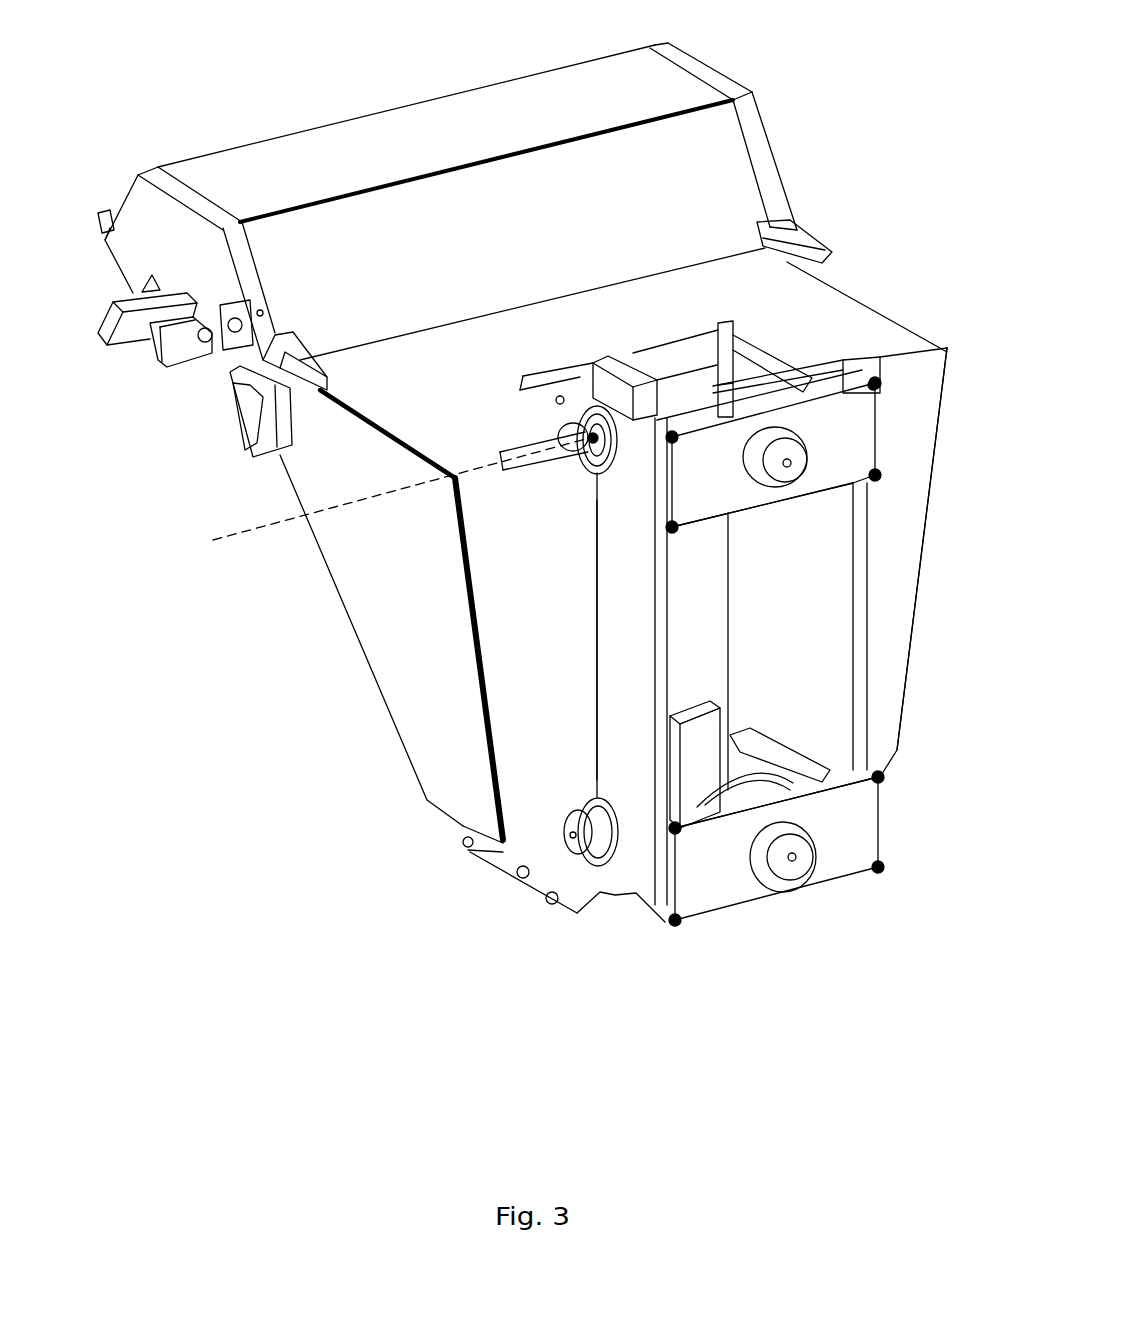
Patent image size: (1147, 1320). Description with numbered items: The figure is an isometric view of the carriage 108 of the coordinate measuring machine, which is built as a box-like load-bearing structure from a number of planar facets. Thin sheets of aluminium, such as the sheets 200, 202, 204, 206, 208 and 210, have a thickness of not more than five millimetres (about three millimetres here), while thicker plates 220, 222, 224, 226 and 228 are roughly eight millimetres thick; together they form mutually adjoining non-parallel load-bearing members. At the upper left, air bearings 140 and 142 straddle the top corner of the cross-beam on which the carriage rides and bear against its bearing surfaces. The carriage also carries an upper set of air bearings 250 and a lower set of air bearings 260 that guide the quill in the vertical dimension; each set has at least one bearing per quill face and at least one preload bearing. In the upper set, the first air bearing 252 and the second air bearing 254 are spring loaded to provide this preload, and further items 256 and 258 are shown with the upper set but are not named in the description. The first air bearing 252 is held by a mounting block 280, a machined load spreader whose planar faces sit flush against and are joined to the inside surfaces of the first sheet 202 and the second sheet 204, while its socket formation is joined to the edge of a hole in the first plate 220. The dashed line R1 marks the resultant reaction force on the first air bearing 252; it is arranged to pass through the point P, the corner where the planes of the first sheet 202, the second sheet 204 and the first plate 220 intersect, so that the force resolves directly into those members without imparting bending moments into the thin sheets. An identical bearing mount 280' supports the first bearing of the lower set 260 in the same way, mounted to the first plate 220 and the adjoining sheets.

The carriage 108 is at (812, 140).
The sheet 210 is at (425, 168).
The sheet 208 is at (510, 226).
The second sheet 204 is at (514, 363).
The air bearing 140 is at (125, 350).
The air bearing 142 is at (173, 363).
The line of resultant reaction force R1 is at (387, 503).
The sheet 200 is at (472, 688).
The first sheet 202 is at (550, 635).
The first plate 220 is at (613, 635).
The mounting block 280 is at (492, 371).
The point P is at (593, 437).
The bearing mount 280' is at (535, 908).
The upper set of air bearings 250 is at (795, 350).
The first air bearing 252 is at (607, 370).
The top bar 258 is at (667, 367).
The second air bearing 254 is at (733, 393).
The bracket 256 is at (733, 348).
The sheet 206 is at (798, 455).
The plate 226 is at (744, 461).
The plate 224 is at (775, 655).
The plate 222 is at (678, 658).
The lower set of air bearings 260 is at (808, 750).
The plate 228 is at (776, 848).